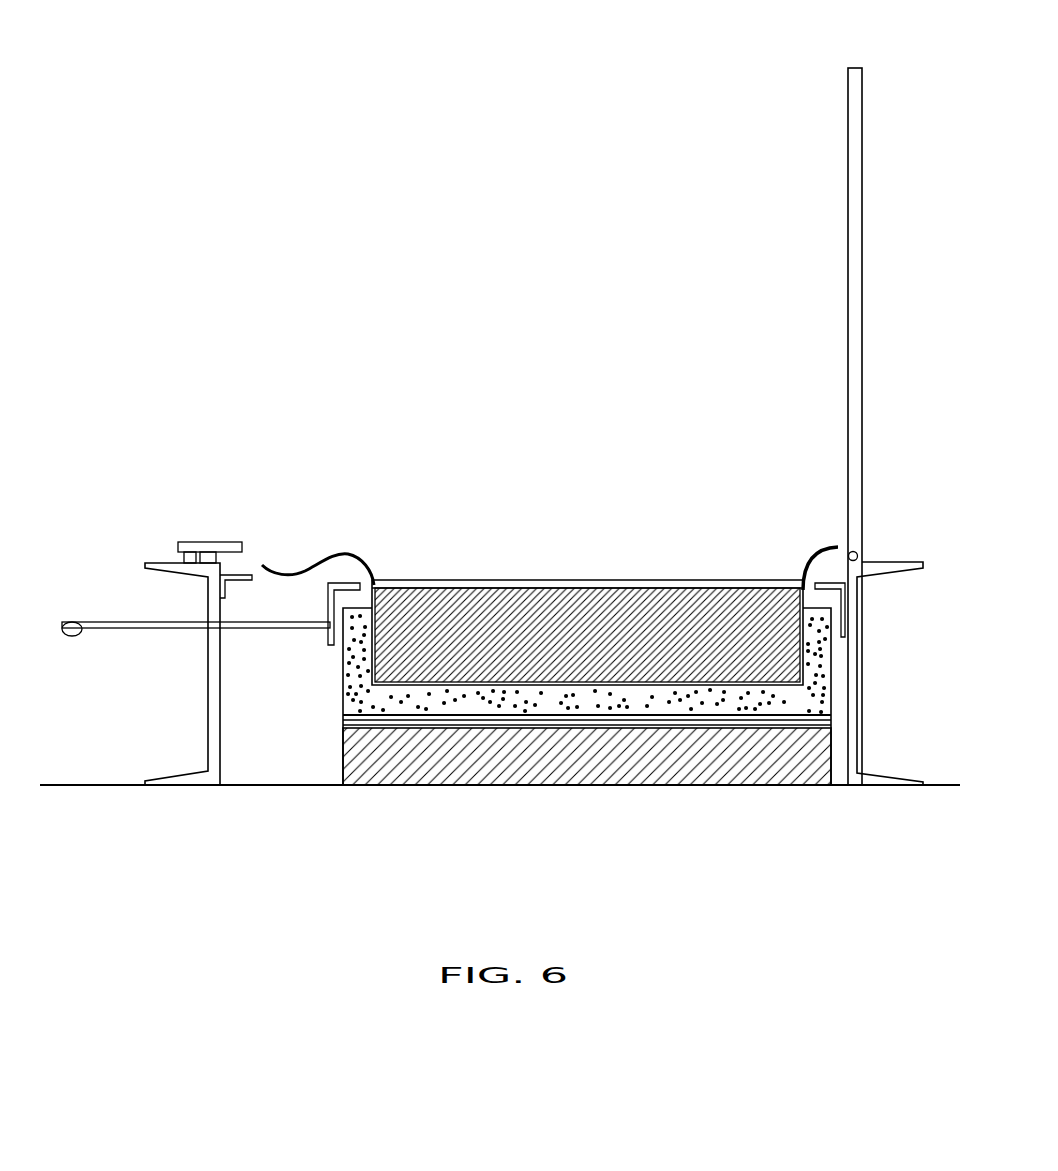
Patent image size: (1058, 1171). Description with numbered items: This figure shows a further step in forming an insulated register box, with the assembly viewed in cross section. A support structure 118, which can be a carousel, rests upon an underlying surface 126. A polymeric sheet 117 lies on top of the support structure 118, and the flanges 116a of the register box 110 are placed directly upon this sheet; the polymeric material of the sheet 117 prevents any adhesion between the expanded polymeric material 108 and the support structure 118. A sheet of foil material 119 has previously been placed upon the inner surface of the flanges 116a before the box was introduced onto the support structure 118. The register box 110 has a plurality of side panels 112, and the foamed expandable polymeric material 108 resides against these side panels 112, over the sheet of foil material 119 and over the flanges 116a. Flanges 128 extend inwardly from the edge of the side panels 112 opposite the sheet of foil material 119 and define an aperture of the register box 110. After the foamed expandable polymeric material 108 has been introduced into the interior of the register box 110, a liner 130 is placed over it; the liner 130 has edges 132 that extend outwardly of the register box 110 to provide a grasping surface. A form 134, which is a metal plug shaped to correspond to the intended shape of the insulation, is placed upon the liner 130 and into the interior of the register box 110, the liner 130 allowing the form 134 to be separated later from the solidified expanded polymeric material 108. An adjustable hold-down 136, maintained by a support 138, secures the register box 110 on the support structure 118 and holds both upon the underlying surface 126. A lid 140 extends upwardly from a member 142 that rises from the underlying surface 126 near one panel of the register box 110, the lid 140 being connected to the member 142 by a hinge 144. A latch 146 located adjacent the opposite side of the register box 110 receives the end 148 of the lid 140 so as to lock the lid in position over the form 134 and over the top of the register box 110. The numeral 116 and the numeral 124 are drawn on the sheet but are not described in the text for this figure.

The foamed expandable polymeric material 108 is at (824, 671).
The register box 110 is at (343, 713).
The side panels 112 is at (832, 643).
The base plate 116 is at (746, 728).
The flanges 116a is at (360, 705).
The polymeric sheet 117 is at (343, 726).
The support structure 118 is at (805, 777).
The sheet of foil material 119 is at (793, 713).
The recess 124 is at (428, 728).
The underlying surface 126 is at (280, 788).
The flanges 128 is at (333, 626).
The liner 130 is at (352, 555).
The edges 132 is at (803, 546).
The form 134 is at (553, 607).
The adjustable hold-down 136 is at (326, 606).
The support 138 is at (207, 689).
The lid 140 is at (863, 337).
The member 142 is at (900, 560).
The hinge 144 is at (858, 553).
The latch 146 is at (215, 541).
The end of the lid 148 is at (856, 66).